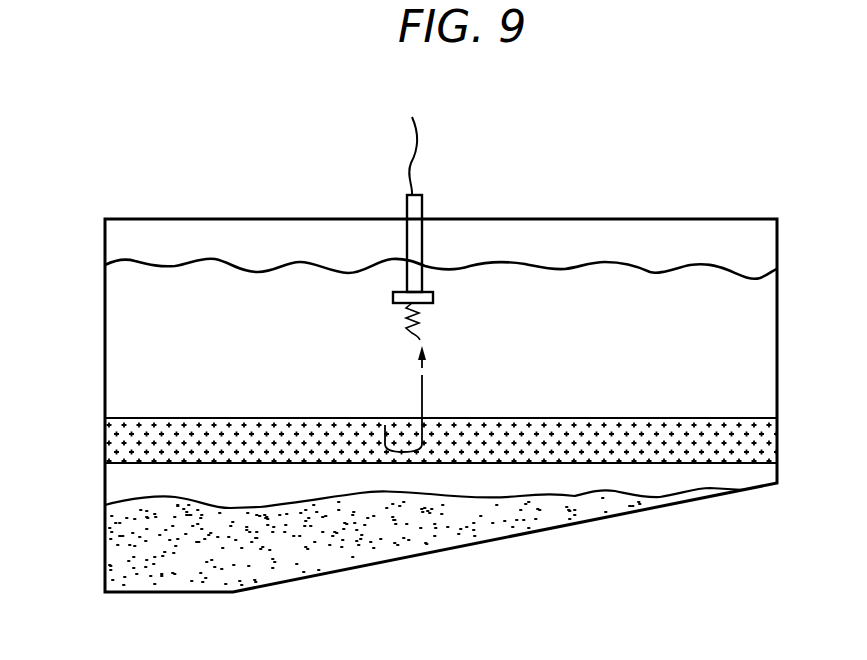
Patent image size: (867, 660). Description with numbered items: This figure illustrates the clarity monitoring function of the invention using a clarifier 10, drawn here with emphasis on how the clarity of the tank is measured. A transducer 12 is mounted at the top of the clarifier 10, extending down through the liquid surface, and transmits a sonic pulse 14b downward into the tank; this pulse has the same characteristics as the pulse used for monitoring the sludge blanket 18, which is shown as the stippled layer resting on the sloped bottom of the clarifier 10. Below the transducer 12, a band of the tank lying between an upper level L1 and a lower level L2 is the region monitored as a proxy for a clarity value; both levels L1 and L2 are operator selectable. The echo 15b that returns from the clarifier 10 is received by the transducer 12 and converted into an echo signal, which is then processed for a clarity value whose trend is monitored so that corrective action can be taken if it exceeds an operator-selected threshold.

The clarifier 10 is at (686, 562).
The transducer 12 is at (436, 298).
The sonic pulse 14b is at (424, 316).
The echo 15b is at (418, 353).
The sludge blanket 18 is at (105, 505).
The level L1 is at (103, 418).
The level L2 is at (103, 462).